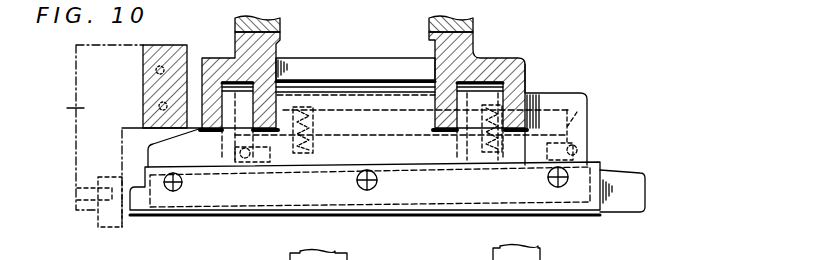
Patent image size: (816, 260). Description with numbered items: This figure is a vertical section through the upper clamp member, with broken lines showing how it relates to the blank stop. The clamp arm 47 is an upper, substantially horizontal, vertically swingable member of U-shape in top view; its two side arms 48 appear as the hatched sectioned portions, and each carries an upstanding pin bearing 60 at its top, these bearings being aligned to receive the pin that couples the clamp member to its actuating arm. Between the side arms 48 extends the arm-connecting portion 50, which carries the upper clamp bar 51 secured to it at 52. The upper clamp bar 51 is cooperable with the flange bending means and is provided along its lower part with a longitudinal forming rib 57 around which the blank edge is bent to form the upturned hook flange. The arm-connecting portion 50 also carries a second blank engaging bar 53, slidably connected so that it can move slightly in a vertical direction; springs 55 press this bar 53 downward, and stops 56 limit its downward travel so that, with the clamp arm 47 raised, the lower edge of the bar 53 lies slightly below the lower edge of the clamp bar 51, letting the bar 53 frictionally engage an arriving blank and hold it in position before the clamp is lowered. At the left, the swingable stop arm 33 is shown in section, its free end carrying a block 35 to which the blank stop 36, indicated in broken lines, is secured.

The stop arm 33 is at (146, 78).
The block 35 is at (85, 127).
The blank stop 36 is at (113, 220).
The clamp arm 47 is at (527, 63).
The side arms 48 is at (218, 60).
The arm-connecting portion 50 is at (372, 48).
The upper clamp bar 51 is at (601, 161).
The securing means 52 is at (179, 162).
The second blank engaging bar 53 is at (632, 175).
The springs 55 is at (305, 153).
The stops 56 is at (263, 143).
The longitudinal forming rib 57 is at (442, 208).
The pin bearings 60 is at (281, 26).